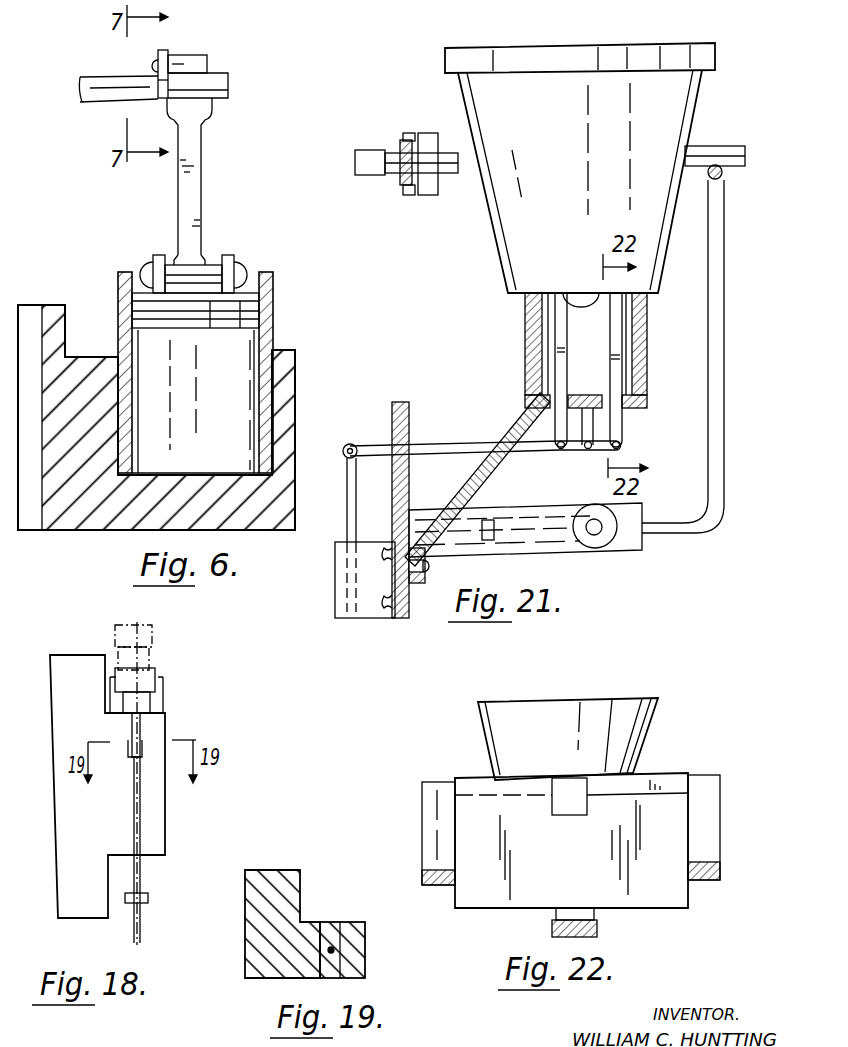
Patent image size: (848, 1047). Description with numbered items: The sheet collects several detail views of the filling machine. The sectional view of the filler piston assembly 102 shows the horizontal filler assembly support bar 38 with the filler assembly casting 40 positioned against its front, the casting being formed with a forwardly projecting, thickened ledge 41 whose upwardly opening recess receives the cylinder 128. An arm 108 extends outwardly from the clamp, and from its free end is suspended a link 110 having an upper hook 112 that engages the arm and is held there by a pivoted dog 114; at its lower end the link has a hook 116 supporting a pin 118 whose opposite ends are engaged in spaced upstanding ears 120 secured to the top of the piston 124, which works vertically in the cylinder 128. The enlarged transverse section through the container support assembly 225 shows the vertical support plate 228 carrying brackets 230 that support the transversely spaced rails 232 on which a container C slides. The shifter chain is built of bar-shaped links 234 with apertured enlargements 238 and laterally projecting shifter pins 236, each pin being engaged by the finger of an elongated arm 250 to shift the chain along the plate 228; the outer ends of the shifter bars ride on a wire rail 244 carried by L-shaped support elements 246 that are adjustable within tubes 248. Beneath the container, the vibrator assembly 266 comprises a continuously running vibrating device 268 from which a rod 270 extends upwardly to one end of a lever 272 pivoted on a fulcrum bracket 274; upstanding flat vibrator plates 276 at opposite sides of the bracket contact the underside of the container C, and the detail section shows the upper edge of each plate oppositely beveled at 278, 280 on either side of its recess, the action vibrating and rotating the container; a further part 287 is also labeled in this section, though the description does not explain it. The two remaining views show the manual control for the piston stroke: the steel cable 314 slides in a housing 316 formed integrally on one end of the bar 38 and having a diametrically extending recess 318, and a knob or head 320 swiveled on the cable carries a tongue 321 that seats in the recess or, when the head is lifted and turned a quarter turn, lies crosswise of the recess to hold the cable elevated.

In FIG. 6, the filler assembly support bar 38 is at (30, 318).
In FIG. 18, the filler assembly support bar 38 is at (62, 713).
In FIG. 19, the filler assembly support bar 38 is at (262, 876).
In FIG. 6, the filler assembly casting 40 is at (42, 505).
In FIG. 6, the ledge 41 is at (285, 400).
In FIG. 6, the filler piston assembly 102 is at (98, 70).
In FIG. 6, the arm 108 is at (222, 80).
In FIG. 6, the link 110 is at (203, 176).
In FIG. 6, the hook 112 is at (207, 57).
In FIG. 6, the pivoted dog 114 is at (163, 50).
In FIG. 6, the hook 116 is at (205, 265).
In FIG. 6, the pin 118 is at (178, 257).
In FIG. 6, the ears 120 is at (155, 258).
In FIG. 6, the piston 124 is at (240, 328).
In FIG. 6, the cylinder 128 is at (268, 295).
In FIG. 21, the container C is at (513, 95).
In FIG. 22, the container C is at (562, 708).
In FIG. 22, the container support assembly 225 is at (720, 826).
In FIG. 21, the support plate 228 is at (400, 402).
In FIG. 21, the brackets 230 is at (458, 482).
In FIG. 22, the brackets 230 is at (700, 882).
In FIG. 21, the rails 232 is at (530, 390).
In FIG. 22, the rails 232 is at (712, 848).
In FIG. 21, the shifter chain links 234 is at (410, 197).
In FIG. 21, the shifter pin 236 is at (398, 176).
In FIG. 21, the apertured enlargements 238 is at (428, 133).
In FIG. 21, the wire rail 244 is at (724, 146).
In FIG. 21, the L-shaped support elements 246 is at (707, 315).
In FIG. 21, the tubes 248 is at (627, 547).
In FIG. 21, the arm 250 is at (372, 150).
In FIG. 21, the vibrator assembly 266 is at (328, 614).
In FIG. 22, the vibrator assembly 266 is at (690, 800).
In FIG. 21, the vibrating device 268 is at (368, 612).
In FIG. 21, the rod 270 is at (340, 542).
In FIG. 21, the lever 272 is at (462, 448).
In FIG. 22, the lever 272 is at (597, 922).
In FIG. 21, the fulcrum bracket 274 is at (582, 452).
In FIG. 21, the vibrator plates 276 is at (611, 367).
In FIG. 22, the vibrator plates 276 is at (465, 822).
In FIG. 22, the bevel 278 is at (645, 785).
In FIG. 21, the bevel 280 is at (548, 300).
In FIG. 22, the bevel 280 is at (510, 775).
In FIG. 21, the seal 287 is at (582, 300).
In FIG. 18, the steel cable 314 is at (145, 918).
In FIG. 19, the steel cable 314 is at (345, 955).
In FIG. 18, the housing 316 is at (165, 810).
In FIG. 19, the housing 316 is at (367, 946).
In FIG. 18, the recess 318 is at (133, 765).
In FIG. 19, the recess 318 is at (332, 928).
In FIG. 18, the knob or head 320 is at (152, 640).
In FIG. 18, the tongue 321 is at (140, 735).
In FIG. 19, the tongue 321 is at (300, 975).